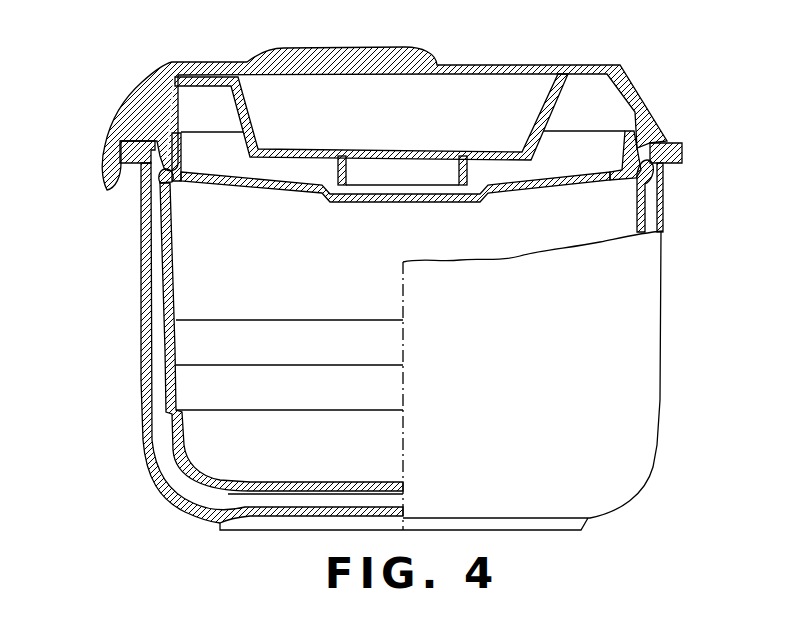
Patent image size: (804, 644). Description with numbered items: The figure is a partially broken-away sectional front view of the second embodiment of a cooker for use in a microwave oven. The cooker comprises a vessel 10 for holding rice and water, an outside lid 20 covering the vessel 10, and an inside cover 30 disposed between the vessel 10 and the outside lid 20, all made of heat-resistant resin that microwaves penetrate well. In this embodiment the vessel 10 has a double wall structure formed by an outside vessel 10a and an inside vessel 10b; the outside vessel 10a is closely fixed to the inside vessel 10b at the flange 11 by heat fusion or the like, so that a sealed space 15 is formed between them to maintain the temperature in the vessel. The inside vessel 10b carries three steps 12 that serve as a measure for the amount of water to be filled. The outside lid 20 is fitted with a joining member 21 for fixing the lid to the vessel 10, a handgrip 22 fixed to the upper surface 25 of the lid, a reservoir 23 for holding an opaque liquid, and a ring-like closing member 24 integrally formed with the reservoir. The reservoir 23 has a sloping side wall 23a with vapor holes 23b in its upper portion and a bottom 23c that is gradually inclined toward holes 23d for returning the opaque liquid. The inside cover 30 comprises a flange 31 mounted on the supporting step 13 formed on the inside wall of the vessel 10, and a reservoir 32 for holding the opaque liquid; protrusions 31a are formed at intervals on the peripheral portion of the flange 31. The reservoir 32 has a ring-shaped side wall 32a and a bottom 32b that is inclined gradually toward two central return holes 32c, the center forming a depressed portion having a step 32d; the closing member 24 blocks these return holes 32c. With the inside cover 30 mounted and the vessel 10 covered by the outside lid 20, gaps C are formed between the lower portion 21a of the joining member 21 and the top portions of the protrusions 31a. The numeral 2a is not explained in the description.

The left flange of container 2a is at (107, 172).
The vessel 10 is at (664, 280).
The outside vessel 10a is at (158, 482).
The inside vessel 10b is at (184, 440).
The flange 11 is at (683, 150).
The steps 12 is at (313, 319).
The supporting step 13 is at (173, 187).
The sealed space 15 is at (158, 392).
The outside lid 20 is at (634, 80).
The joining member 21 is at (667, 133).
The lower portion of the joining member 21a is at (166, 163).
The handgrip 22 is at (353, 50).
The reservoir 23 is at (465, 80).
The sloping side wall 23a is at (250, 94).
The vapor holes 23b is at (556, 84).
The bottom 23c is at (410, 148).
The holes 23d is at (519, 156).
The closing member 24 is at (346, 172).
The upper surface 25 is at (221, 77).
The inside cover 30 is at (271, 193).
The flange 31 is at (636, 182).
The protrusions 31a is at (141, 195).
The reservoir 32 is at (528, 175).
The side wall 32a is at (183, 150).
The bottom 32b is at (505, 190).
The holes 32c is at (434, 200).
The step 32d is at (321, 198).
The gaps C is at (663, 172).